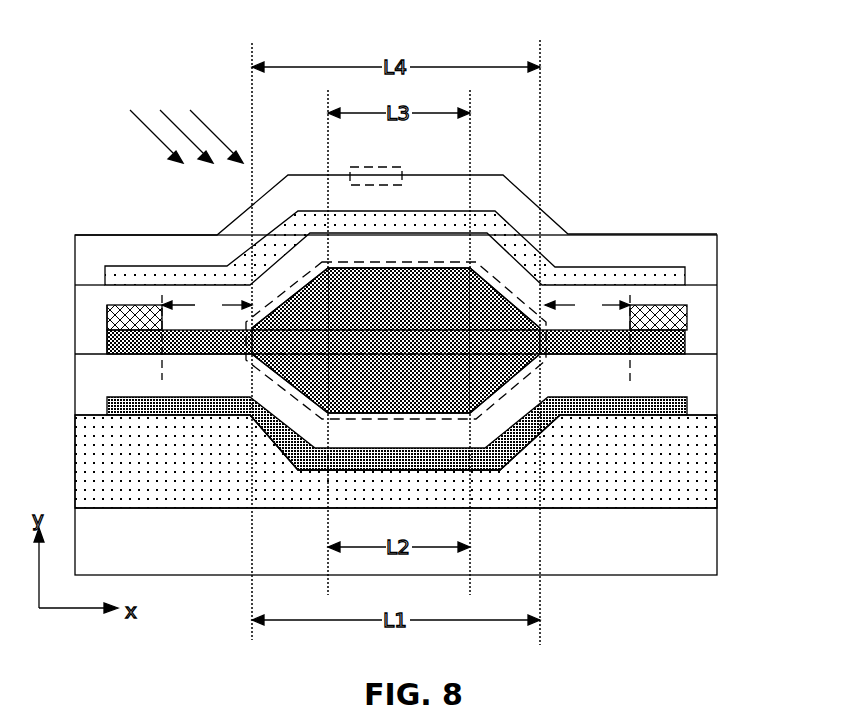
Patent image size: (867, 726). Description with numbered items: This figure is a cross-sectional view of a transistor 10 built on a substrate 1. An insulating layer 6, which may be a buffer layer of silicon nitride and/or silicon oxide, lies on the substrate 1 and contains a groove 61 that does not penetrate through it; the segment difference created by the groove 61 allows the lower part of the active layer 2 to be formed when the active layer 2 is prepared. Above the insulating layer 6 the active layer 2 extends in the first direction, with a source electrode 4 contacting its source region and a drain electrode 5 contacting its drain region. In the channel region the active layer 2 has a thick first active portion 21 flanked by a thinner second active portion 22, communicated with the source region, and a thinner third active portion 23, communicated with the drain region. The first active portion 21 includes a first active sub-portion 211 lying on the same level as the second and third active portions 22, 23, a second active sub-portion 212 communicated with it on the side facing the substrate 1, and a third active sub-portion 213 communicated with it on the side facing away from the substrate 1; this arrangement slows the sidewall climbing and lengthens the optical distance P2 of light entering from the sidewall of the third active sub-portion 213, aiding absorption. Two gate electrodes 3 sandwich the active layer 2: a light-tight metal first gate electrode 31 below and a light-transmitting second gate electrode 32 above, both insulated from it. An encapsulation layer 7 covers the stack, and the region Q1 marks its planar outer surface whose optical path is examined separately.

The transistor 10 is at (121, 62).
The substrate 1 is at (717, 540).
The insulating layer 6 is at (717, 473).
The groove 61 is at (518, 453).
The gate electrode 3 is at (449, 340).
The first gate electrode 31 is at (687, 407).
The second gate electrode 32 is at (685, 278).
The encapsulation layer 7 is at (702, 234).
The active layer 2 is at (687, 340).
The second active portion 22 is at (203, 346).
The third active portion 23 is at (584, 346).
The drain electrode 5 is at (687, 308).
The source electrode 4 is at (103, 314).
The first active portion 21 is at (656, 64).
The first active sub-portion 211 is at (452, 327).
The second active sub-portion 212 is at (405, 421).
The third active sub-portion 213 is at (390, 262).
The optical distance P2 is at (466, 409).
The region Q1 is at (403, 178).